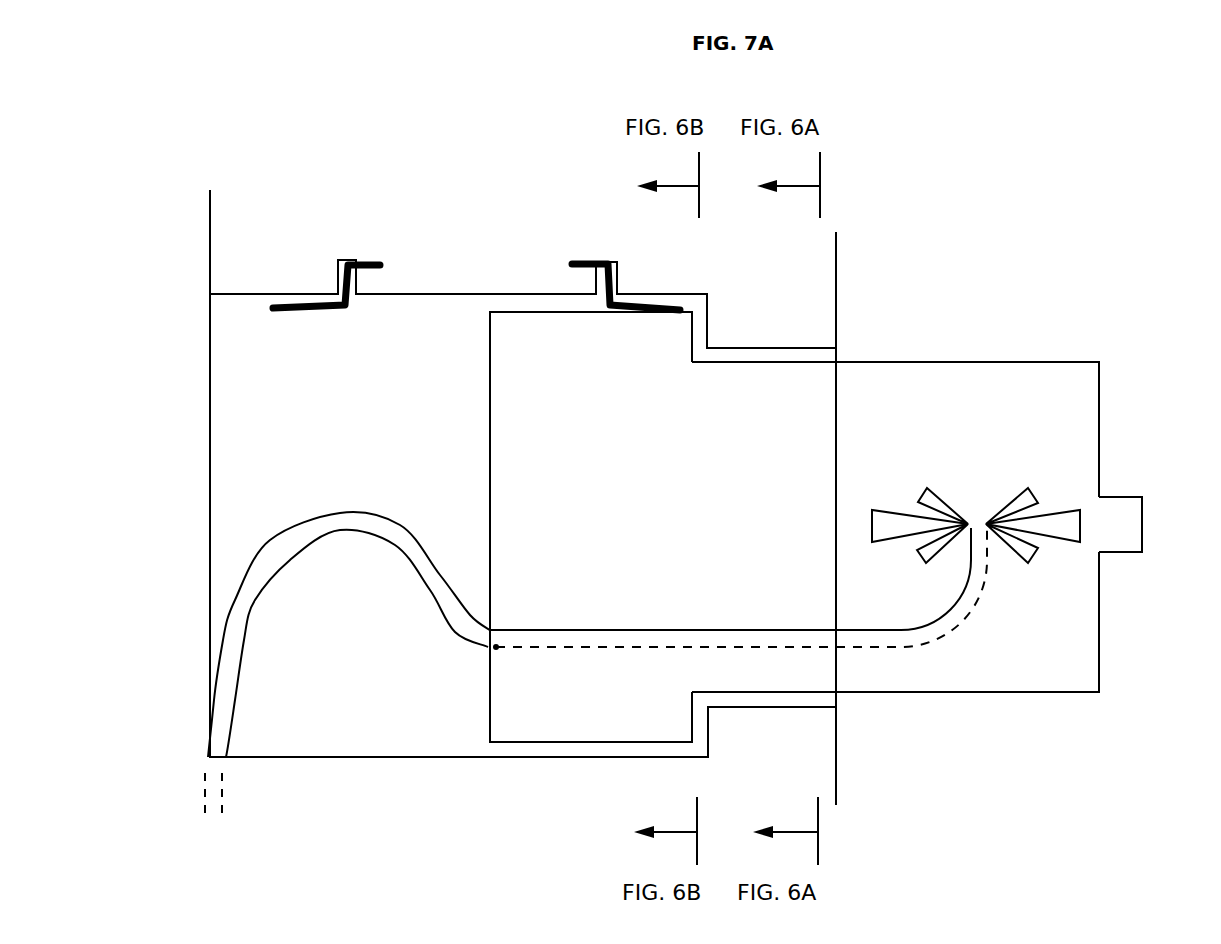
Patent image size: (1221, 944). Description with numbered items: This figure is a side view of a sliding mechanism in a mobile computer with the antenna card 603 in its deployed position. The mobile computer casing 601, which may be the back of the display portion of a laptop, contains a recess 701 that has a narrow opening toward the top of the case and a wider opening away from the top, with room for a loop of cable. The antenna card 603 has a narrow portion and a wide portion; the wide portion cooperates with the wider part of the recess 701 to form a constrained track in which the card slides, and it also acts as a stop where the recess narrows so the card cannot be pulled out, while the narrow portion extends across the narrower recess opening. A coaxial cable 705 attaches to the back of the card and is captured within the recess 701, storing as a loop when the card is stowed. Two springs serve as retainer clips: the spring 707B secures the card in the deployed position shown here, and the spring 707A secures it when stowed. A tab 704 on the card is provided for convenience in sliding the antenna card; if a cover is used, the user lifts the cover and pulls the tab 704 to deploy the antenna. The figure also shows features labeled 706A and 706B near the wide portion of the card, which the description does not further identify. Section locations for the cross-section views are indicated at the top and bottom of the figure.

The mobile computer casing 601 is at (836, 270).
The antenna card 603 is at (1099, 415).
The recess 701 is at (375, 420).
The tab 704 is at (1142, 513).
The coaxial cable 705 is at (240, 590).
The spring contact fingers 706A is at (1027, 582).
The spring contact fingers 706B is at (935, 469).
The spring 707A is at (305, 300).
The spring 707B is at (640, 303).